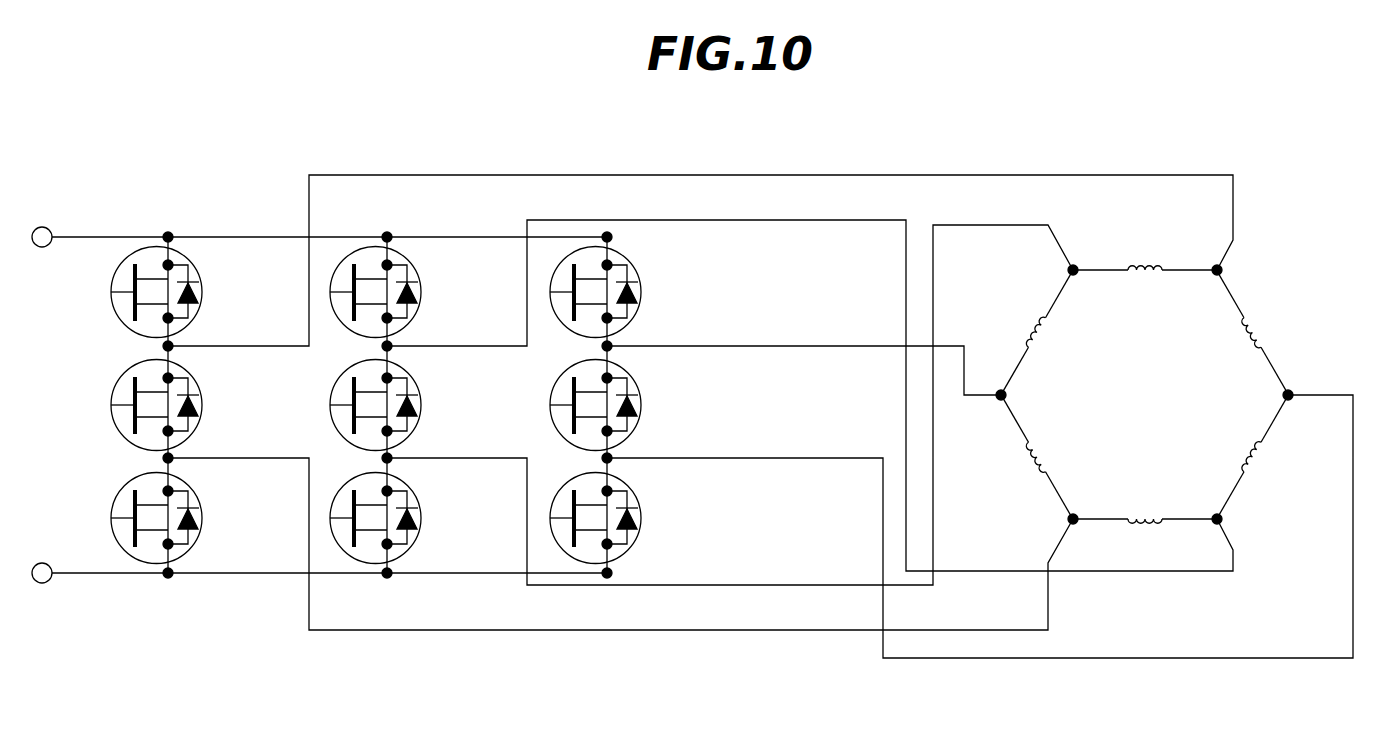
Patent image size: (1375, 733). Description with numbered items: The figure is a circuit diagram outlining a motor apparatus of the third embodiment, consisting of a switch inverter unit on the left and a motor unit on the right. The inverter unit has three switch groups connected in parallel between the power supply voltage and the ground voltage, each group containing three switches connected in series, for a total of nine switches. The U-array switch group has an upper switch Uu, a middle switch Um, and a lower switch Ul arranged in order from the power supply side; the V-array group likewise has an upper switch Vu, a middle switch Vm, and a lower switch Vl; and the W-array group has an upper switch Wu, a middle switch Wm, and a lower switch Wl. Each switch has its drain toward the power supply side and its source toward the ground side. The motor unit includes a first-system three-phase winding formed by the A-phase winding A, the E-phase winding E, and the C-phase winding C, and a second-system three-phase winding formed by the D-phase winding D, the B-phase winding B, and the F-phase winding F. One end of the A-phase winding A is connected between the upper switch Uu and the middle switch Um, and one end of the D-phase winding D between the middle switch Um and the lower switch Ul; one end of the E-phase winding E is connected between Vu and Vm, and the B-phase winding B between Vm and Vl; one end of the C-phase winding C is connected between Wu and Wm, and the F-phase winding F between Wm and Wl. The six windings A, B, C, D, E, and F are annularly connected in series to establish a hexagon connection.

The upper switch Uu is at (170, 292).
The middle switch Um is at (174, 405).
The lower switch Ul is at (166, 518).
The upper switch Vu is at (388, 292).
The middle switch Vm is at (392, 405).
The lower switch Vl is at (384, 518).
The upper switch Wu is at (611, 292).
The middle switch Wm is at (615, 405).
The lower switch Wl is at (608, 518).
The A-phase winding A is at (1145, 287).
The B-phase winding B is at (1035, 331).
The C-phase winding C is at (1035, 458).
The D-phase winding D is at (1145, 504).
The E-phase winding E is at (1251, 456).
The F-phase winding F is at (1251, 333).